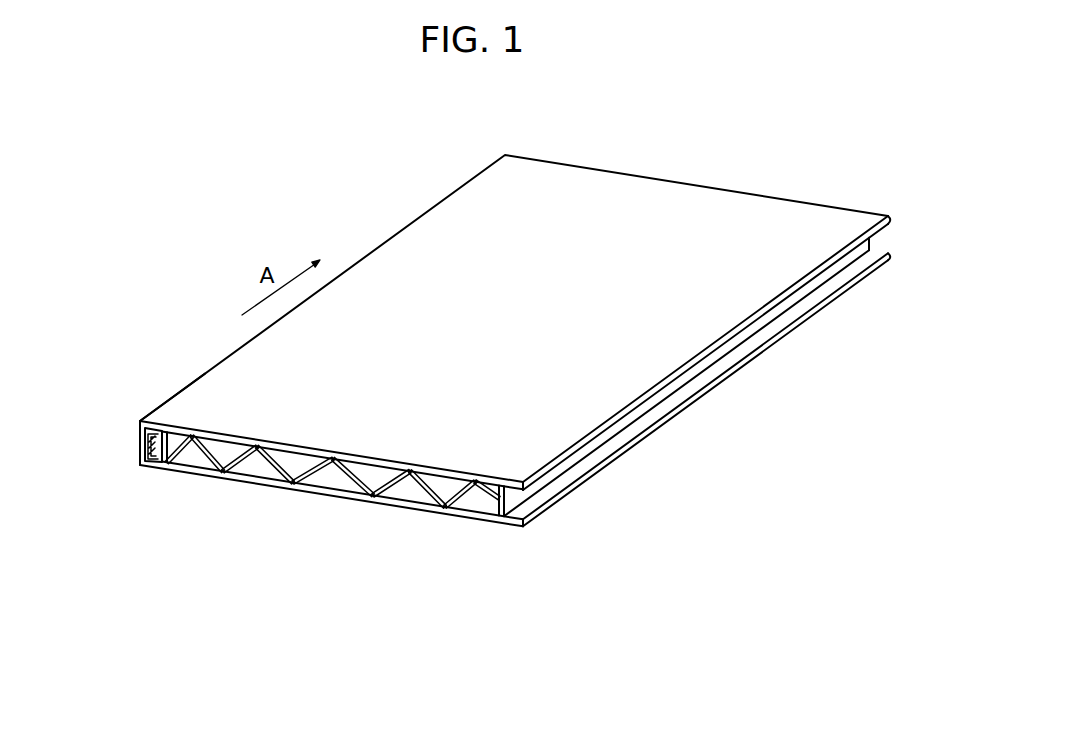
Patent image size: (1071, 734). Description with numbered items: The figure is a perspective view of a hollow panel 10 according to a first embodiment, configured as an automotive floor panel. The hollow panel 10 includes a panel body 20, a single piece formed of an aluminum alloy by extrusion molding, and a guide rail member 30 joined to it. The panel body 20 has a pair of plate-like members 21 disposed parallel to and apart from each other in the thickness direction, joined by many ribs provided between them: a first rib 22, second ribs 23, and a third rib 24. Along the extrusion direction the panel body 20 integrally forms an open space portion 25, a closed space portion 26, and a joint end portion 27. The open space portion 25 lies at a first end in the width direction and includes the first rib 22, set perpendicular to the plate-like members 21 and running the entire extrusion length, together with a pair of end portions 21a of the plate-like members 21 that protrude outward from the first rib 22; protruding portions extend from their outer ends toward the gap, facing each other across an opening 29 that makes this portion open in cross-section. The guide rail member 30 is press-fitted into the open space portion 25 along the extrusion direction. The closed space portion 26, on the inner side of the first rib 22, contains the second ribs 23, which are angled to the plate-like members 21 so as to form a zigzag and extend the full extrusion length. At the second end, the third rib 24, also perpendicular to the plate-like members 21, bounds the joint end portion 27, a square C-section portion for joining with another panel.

The hollow panel 10 is at (222, 162).
The panel body 20 is at (656, 200).
The plate-like member 21 is at (440, 285).
The end portion 21a is at (190, 395).
The first rib 22 is at (163, 452).
The second rib 23 is at (232, 448).
The third rib 24 is at (490, 492).
The open space portion 25 is at (198, 372).
The closed space portion 26 is at (290, 498).
The joint end portion 27 is at (507, 540).
The opening 29 is at (140, 430).
The guide rail member 30 is at (150, 436).